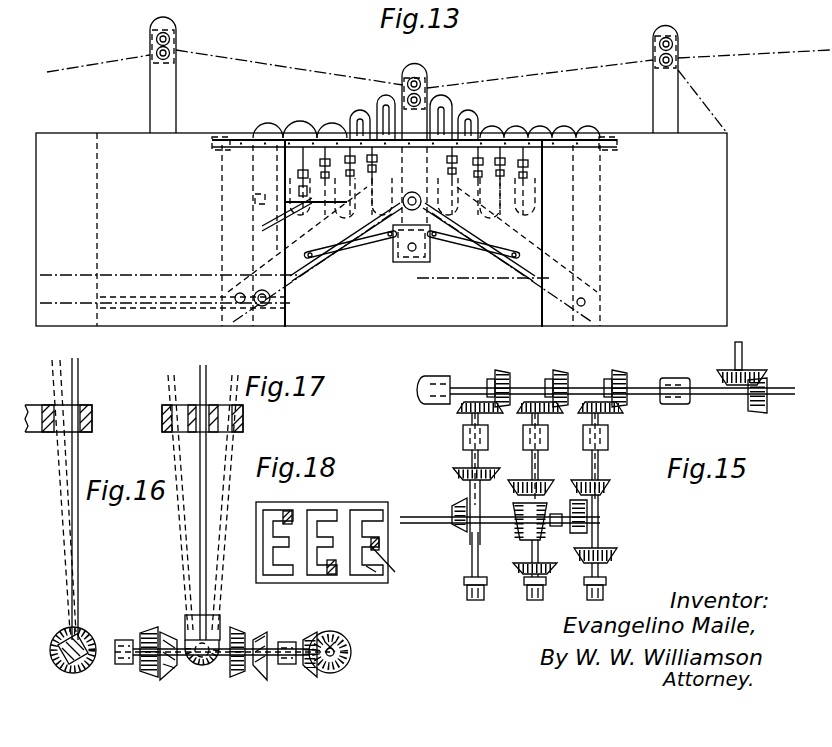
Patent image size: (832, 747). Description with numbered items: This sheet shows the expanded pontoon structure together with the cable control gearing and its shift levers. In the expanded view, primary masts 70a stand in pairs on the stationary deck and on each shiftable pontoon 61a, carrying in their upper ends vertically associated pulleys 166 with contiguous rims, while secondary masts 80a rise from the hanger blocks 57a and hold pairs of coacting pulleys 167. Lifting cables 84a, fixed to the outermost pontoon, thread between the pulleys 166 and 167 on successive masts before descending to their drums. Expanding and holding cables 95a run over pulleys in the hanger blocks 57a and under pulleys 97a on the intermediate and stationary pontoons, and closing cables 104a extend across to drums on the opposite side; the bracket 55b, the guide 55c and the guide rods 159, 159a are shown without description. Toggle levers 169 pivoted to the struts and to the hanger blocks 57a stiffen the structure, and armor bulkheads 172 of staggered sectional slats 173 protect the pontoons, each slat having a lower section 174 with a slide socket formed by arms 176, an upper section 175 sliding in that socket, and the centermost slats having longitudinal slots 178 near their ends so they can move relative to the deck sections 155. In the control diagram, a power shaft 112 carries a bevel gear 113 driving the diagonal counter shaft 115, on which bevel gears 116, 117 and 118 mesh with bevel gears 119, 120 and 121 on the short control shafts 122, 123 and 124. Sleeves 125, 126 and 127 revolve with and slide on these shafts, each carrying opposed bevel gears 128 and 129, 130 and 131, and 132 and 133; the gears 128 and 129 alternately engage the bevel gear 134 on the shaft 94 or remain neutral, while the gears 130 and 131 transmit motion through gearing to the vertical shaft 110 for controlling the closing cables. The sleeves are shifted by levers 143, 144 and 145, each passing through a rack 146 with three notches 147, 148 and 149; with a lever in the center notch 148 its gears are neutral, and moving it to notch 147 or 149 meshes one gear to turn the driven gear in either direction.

In FIG. 13, the primary mast 70a is at (152, 30).
In FIG. 13, the pulley 166 is at (157, 53).
In FIG. 13, the coacting pulley 167 is at (403, 82).
In FIG. 13, the secondary mast 80a is at (428, 76).
In FIG. 13, the lifting cable 84a is at (596, 68).
In FIG. 13, the shiftable pontoon 61a is at (75, 133).
In FIG. 13, the sectional slat 173 is at (268, 125).
In FIG. 13, the armor bulkhead 172 is at (306, 122).
In FIG. 13, the deck section 155 is at (331, 133).
In FIG. 13, the longitudinal slot 178 is at (382, 103).
In FIG. 13, the upper section 175 is at (300, 166).
In FIG. 13, the arm 176 is at (244, 200).
In FIG. 13, the lower section 174 is at (269, 224).
In FIG. 13, the closing cable 104a is at (190, 275).
In FIG. 13, the hanger block 57a is at (396, 256).
In FIG. 13, the toggle lever 169 is at (355, 256).
In FIG. 13, the guide rod 159 is at (315, 300).
In FIG. 13, the guide rod 159a is at (538, 296).
In FIG. 13, the expanding and holding cable 95a is at (541, 312).
In FIG. 13, the pulley 55c is at (240, 304).
In FIG. 13, the pulley 97a is at (262, 307).
In FIG. 13, the pulley 55b is at (586, 302).
In FIG. 16, the rack 146 is at (90, 405).
In FIG. 17, the rack 146 is at (163, 418).
In FIG. 18, the rack 146 is at (364, 502).
In FIG. 16, the notch 147 is at (56, 433).
In FIG. 17, the notch 147 is at (176, 433).
In FIG. 18, the notch 147 is at (372, 518).
In FIG. 16, the lever 143 is at (62, 547).
In FIG. 17, the lever 143 is at (192, 530).
In FIG. 18, the lever 143 is at (398, 566).
In FIG. 15, the lever 143 is at (612, 520).
In FIG. 17, the bevel gear 129 is at (165, 628).
In FIG. 15, the bevel gear 129 is at (608, 568).
In FIG. 17, the bevel gear 128 is at (252, 632).
In FIG. 15, the bevel gear 128 is at (610, 482).
In FIG. 17, the short control shaft 122 is at (288, 641).
In FIG. 15, the short control shaft 122 is at (604, 462).
In FIG. 17, the bevel gear 116 is at (346, 636).
In FIG. 15, the bevel gear 116 is at (612, 373).
In FIG. 17, the diagonal counter shaft 115 is at (352, 648).
In FIG. 15, the diagonal counter shaft 115 is at (640, 386).
In FIG. 17, the bevel gear 119 is at (318, 676).
In FIG. 15, the bevel gear 119 is at (585, 413).
In FIG. 18, the lever 145 is at (262, 516).
In FIG. 15, the lever 145 is at (514, 516).
In FIG. 18, the center notch 148 is at (382, 522).
In FIG. 18, the lever 144 is at (322, 572).
In FIG. 18, the notch 149 is at (372, 572).
In FIG. 15, the bevel gear 118 is at (497, 370).
In FIG. 15, the bevel gear 117 is at (553, 373).
In FIG. 15, the bevel gear 113 is at (733, 368).
In FIG. 15, the power shaft 112 is at (744, 342).
In FIG. 15, the vertical shaft 110 is at (768, 380).
In FIG. 15, the bevel gear 121 is at (462, 413).
In FIG. 15, the bevel gear 120 is at (525, 413).
In FIG. 15, the short control shaft 124 is at (466, 452).
In FIG. 15, the short control shaft 123 is at (540, 462).
In FIG. 15, the bevel gear 132 is at (455, 471).
In FIG. 15, the bevel gear 130 is at (526, 487).
In FIG. 15, the bevel gear 134 is at (573, 496).
In FIG. 15, the sleeve 127 is at (453, 501).
In FIG. 15, the sleeve 125 is at (606, 512).
In FIG. 15, the bevel gear 133 is at (472, 548).
In FIG. 15, the sleeve 126 is at (520, 566).
In FIG. 15, the shaft 94 is at (556, 528).
In FIG. 15, the bevel gear 131 is at (526, 592).